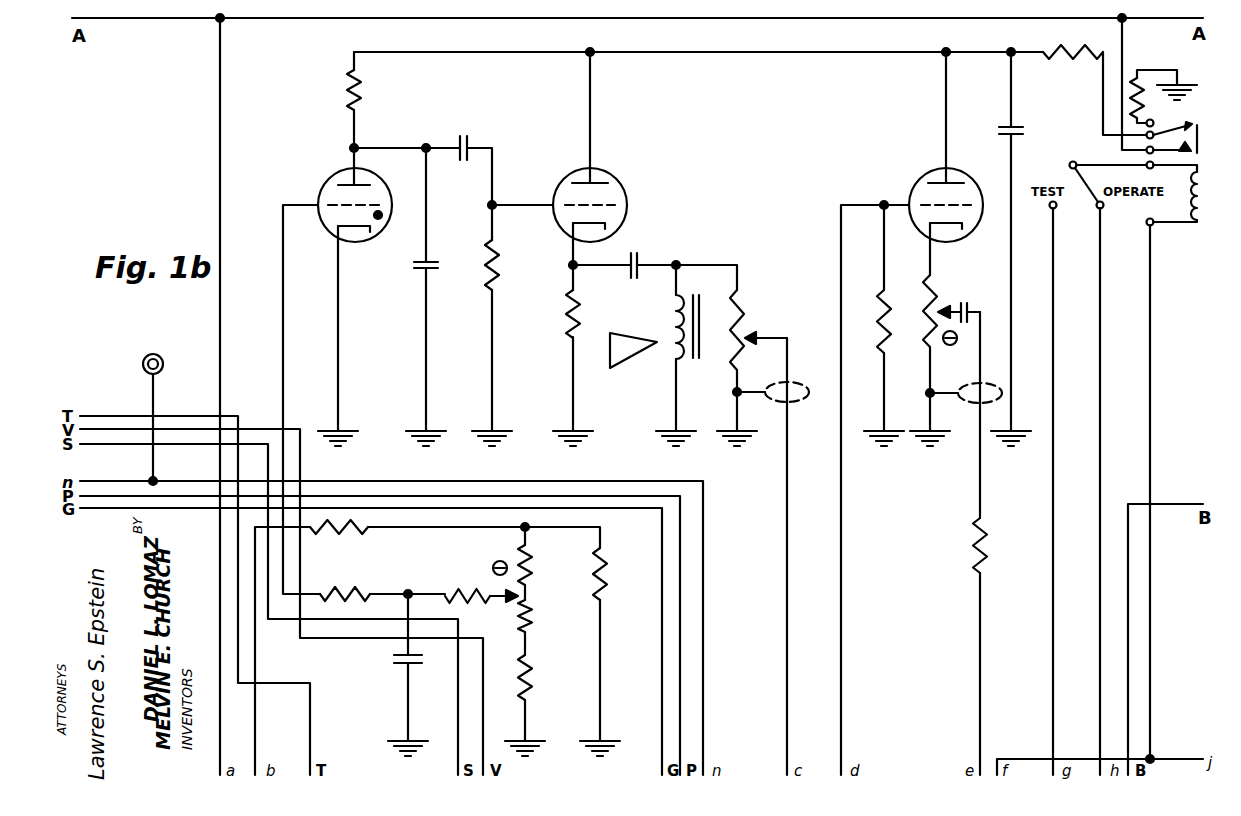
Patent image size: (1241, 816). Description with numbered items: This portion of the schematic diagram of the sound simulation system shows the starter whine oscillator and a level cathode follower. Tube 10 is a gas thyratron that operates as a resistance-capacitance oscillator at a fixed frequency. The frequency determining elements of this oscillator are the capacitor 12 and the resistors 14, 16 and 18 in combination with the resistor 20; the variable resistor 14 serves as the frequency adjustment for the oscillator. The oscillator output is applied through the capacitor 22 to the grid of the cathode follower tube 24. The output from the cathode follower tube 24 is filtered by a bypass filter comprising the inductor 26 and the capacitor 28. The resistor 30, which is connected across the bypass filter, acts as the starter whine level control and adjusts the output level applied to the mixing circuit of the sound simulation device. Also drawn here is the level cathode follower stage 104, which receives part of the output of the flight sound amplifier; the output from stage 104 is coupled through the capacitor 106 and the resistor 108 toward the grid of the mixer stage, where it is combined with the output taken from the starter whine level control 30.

The gas thyratron tube 10 is at (333, 178).
The capacitor 22 is at (470, 144).
The cathode follower tube 24 is at (596, 172).
The capacitor 28 is at (641, 263).
The inductor 26 is at (672, 316).
The resistor 30 is at (742, 308).
The level cathode follower stage 104 is at (930, 175).
The capacitor 106 is at (937, 288).
The resistor 108 is at (988, 554).
The capacitor 12 is at (398, 666).
The resistor 16 is at (461, 588).
The variable resistor 14 is at (531, 582).
The resistor 18 is at (533, 676).
The resistor 20 is at (608, 578).